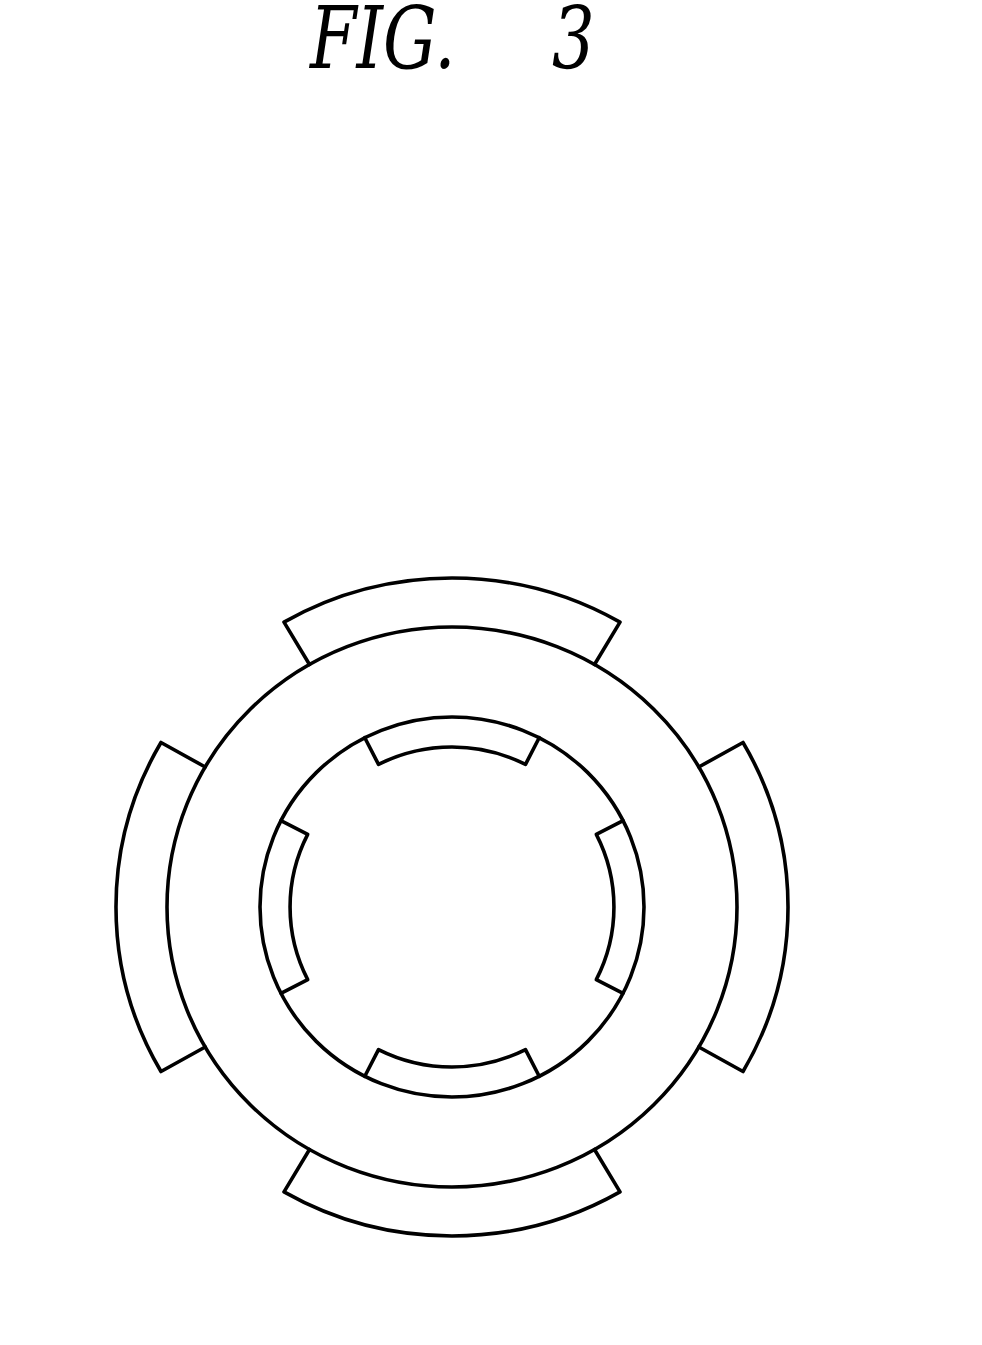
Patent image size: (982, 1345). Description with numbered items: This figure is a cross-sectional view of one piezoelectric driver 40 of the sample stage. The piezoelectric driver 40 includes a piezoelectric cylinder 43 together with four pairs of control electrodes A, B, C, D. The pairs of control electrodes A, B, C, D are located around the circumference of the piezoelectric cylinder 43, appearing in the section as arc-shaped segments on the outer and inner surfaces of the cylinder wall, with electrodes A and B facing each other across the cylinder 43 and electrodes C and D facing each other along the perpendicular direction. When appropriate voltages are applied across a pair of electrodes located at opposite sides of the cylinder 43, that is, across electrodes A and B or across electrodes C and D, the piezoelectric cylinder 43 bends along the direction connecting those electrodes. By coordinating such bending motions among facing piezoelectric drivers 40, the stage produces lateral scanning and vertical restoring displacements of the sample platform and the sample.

The piezoelectric driver 40 is at (812, 527).
The piezoelectric cylinder 43 is at (253, 1107).
The pair of control electrodes A is at (788, 918).
The pair of control electrodes B is at (137, 1028).
The pair of control electrodes C is at (450, 1235).
The pair of control electrodes D is at (580, 597).